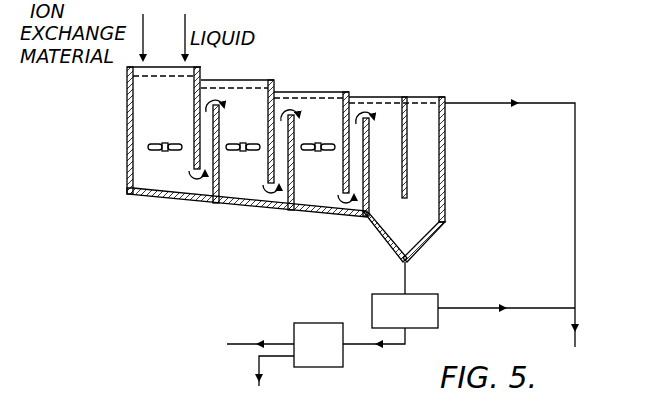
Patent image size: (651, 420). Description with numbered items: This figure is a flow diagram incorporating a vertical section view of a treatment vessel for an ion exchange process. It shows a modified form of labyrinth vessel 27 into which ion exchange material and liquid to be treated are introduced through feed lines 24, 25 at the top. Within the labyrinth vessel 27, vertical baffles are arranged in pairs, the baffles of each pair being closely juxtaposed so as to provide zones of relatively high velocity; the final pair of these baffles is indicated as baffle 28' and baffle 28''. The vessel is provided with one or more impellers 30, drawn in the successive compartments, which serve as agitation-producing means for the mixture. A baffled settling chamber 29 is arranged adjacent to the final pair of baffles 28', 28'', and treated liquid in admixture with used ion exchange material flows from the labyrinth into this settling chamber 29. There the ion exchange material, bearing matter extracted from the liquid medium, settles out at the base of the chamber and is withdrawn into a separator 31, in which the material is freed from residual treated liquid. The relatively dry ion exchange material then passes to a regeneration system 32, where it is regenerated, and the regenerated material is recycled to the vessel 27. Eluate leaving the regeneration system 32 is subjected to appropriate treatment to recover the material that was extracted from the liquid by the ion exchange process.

The feed line 24 is at (364, 0).
The feed line 25 is at (268, 0).
The labyrinth vessel 27 is at (121, 130).
The baffle 28' is at (371, 131).
The baffle 28'' is at (406, 143).
The settling chamber 29 is at (445, 186).
The impeller 30 is at (150, 150).
The separator 31 is at (438, 295).
The regeneration system 32 is at (313, 330).